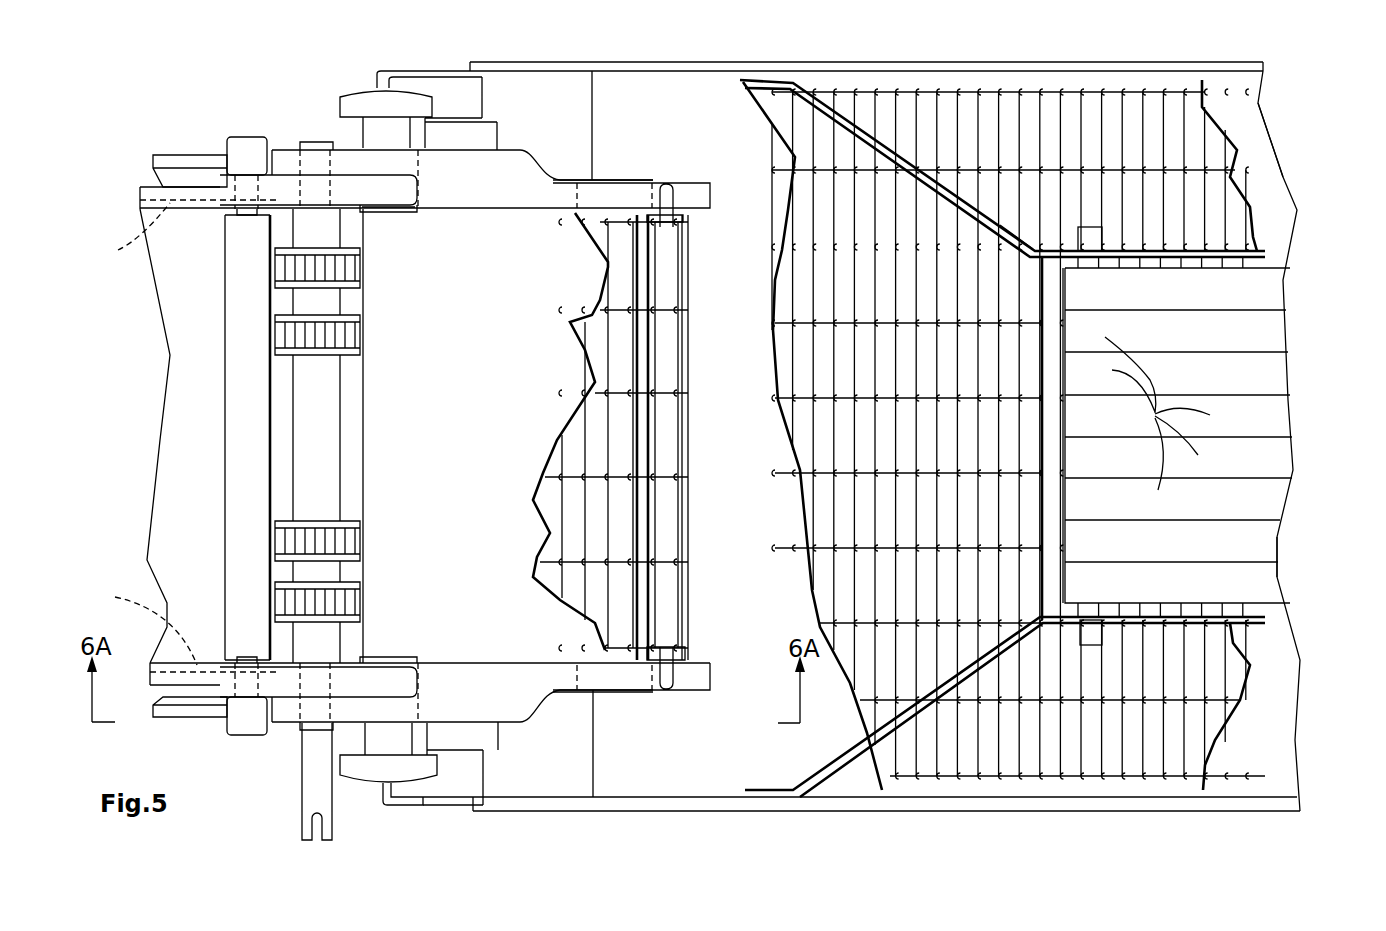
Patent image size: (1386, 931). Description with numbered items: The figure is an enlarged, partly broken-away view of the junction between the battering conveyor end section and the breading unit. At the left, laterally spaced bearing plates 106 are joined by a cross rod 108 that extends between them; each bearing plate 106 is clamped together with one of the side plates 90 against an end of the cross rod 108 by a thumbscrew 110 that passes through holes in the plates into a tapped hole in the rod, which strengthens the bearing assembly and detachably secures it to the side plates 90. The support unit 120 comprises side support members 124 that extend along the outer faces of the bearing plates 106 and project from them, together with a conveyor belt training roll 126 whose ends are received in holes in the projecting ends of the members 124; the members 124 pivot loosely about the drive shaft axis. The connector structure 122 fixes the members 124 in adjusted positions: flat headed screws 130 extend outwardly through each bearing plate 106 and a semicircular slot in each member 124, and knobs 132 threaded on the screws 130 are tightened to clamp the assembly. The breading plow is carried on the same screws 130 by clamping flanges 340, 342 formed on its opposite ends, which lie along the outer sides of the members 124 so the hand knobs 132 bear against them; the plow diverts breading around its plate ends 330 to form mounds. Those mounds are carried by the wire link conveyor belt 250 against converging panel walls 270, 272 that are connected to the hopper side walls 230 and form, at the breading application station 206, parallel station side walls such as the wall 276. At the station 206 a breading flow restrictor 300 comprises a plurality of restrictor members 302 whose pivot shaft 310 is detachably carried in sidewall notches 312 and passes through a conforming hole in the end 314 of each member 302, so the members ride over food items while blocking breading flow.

The side plates 90 is at (141, 434).
The bearing plates 106 is at (222, 193).
The cross rod 108 is at (247, 400).
The thumbscrew 110 is at (253, 160).
The support unit 120 is at (525, 160).
The connector structure 122 is at (401, 788).
The side support members 124 is at (622, 195).
The conveyor belt training roll 126 is at (668, 425).
The flat headed screws 130 is at (388, 213).
The knobs 132 is at (347, 100).
The breading application station 206 is at (1307, 561).
The side walls 230 is at (603, 74).
The conveyor belt 250 is at (1200, 183).
The panel wall 270 is at (937, 700).
The panel wall 272 is at (945, 178).
The breading station side wall 276 is at (1147, 253).
The breading flow restrictor 300 is at (1287, 413).
The flow restrictor members 302 is at (1270, 588).
The pivot shaft 310 is at (1085, 227).
The sidewall notches 312 is at (1050, 250).
The end of restrictor member 314 is at (1157, 413).
The plow plate ends 330 is at (615, 177).
The clamping flange 340 is at (440, 737).
The clamping flange 342 is at (506, 189).